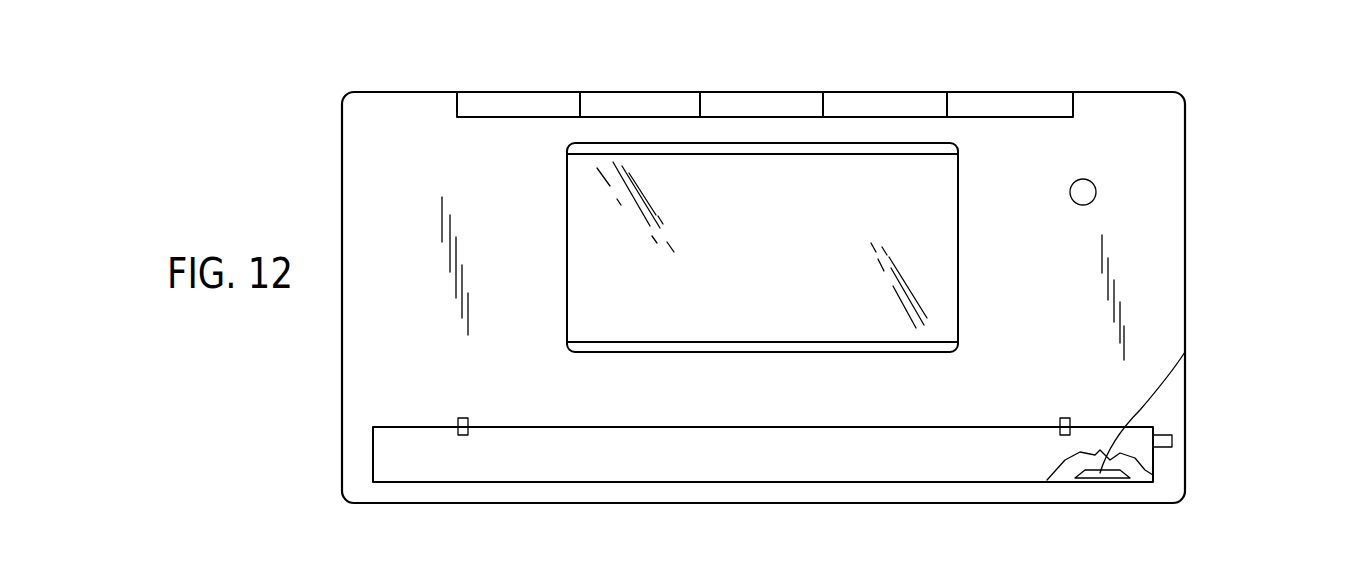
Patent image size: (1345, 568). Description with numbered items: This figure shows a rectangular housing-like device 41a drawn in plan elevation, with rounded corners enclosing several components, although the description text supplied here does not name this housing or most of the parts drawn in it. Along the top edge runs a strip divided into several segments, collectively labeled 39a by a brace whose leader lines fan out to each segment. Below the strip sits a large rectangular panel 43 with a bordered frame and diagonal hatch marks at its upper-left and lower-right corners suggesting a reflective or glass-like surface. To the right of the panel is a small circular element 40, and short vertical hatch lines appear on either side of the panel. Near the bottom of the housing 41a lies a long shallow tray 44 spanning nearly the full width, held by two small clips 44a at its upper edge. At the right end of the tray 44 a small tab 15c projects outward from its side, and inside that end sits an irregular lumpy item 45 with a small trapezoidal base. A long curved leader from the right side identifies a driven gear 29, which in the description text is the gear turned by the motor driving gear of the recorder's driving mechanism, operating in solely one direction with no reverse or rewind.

The housing 41a is at (1217, 152).
The push buttons 39a is at (983, 100).
The display 43 is at (927, 250).
The indicator light 40 is at (1097, 195).
The battery compartment 44 is at (1023, 465).
The retaining clips 44a is at (464, 418).
The connector tab 15c is at (1170, 431).
The battery 45 is at (1140, 475).
The driven gear 29 is at (1185, 352).